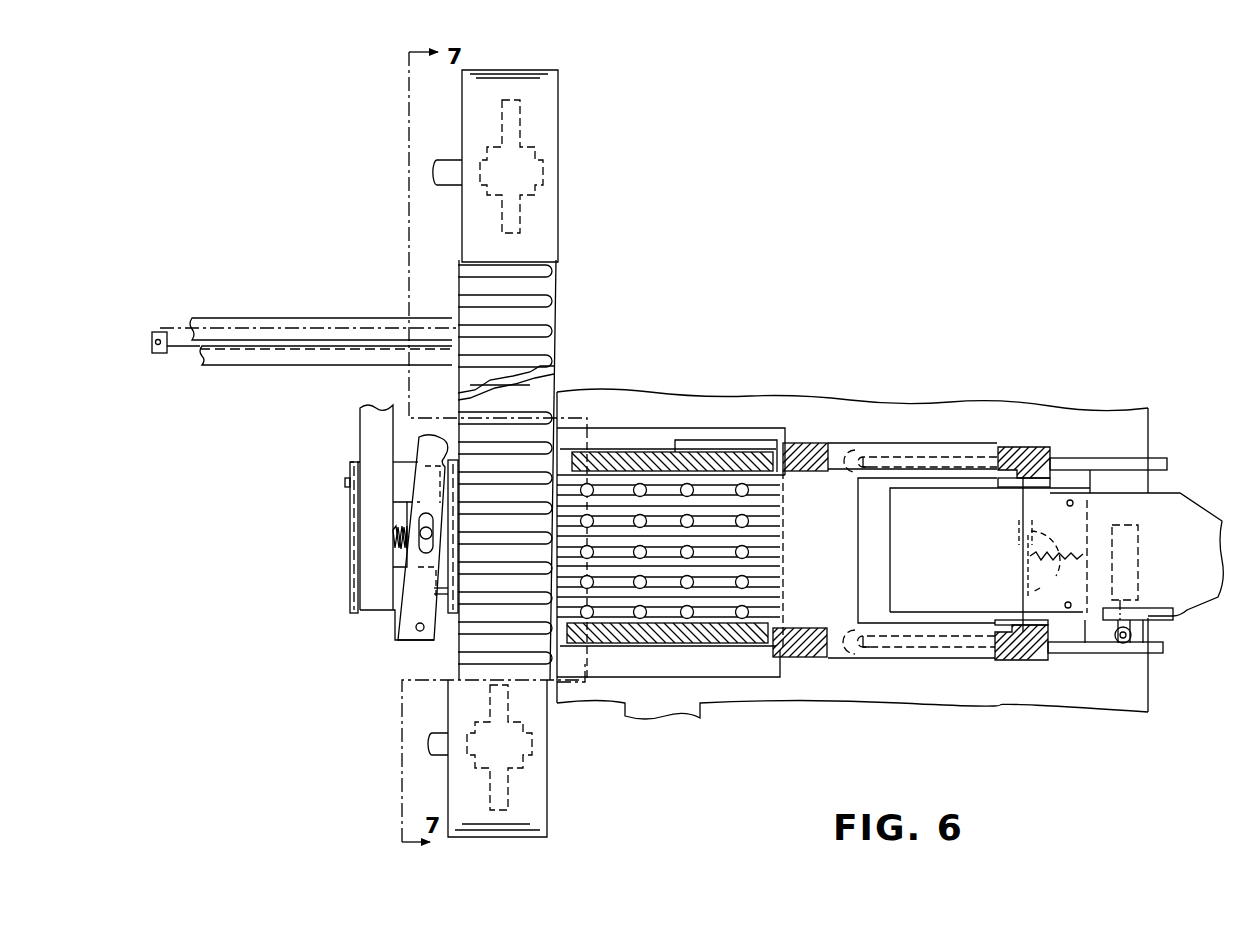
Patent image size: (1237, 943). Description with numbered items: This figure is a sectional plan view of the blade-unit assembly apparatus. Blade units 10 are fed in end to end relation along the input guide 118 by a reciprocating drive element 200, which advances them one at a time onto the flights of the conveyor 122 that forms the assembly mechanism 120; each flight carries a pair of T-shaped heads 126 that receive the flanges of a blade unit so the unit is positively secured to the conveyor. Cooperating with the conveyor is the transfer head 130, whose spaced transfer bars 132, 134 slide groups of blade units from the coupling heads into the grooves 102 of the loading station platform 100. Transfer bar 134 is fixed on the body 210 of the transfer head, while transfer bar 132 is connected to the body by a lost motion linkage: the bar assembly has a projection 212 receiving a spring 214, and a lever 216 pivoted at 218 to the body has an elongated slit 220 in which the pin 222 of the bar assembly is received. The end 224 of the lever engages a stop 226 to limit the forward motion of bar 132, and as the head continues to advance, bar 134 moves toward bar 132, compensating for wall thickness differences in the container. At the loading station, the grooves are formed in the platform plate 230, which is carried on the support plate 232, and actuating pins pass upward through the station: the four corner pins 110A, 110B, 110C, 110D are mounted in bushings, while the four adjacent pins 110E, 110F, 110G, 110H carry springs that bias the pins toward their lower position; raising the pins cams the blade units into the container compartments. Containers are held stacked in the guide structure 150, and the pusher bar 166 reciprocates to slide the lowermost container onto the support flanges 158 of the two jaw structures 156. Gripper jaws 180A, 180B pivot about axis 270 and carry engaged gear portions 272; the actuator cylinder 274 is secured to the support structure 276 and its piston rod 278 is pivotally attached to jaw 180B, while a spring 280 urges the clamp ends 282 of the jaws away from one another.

The blade unit 10 is at (360, 326).
The loading station platform 100 is at (716, 668).
The grooves 102 is at (767, 547).
The corner actuating pin 110A is at (592, 489).
The corner actuating pin 110B is at (592, 611).
The corner actuating pin 110C is at (737, 611).
The corner actuating pin 110D is at (737, 489).
The adjacent actuating pin 110E is at (592, 521).
The adjacent actuating pin 110F is at (592, 581).
The adjacent actuating pin 110G is at (737, 581).
The adjacent actuating pin 110H is at (737, 521).
The input guide 118 is at (228, 318).
The assembly mechanism 120 is at (556, 766).
The conveyor 122 is at (556, 222).
The T-shaped heads 126 is at (552, 305).
The transfer head 130 is at (342, 539).
The transfer bar 132 is at (450, 617).
The transfer bar 134 is at (355, 613).
The guide structure 150 is at (1014, 440).
The jaw structures 156 is at (645, 455).
The support flange 158 is at (603, 452).
The pusher bar 166 is at (892, 526).
The gripper jaw 180A is at (1159, 459).
The gripper jaw 180B is at (1162, 652).
The drive element 200 is at (165, 353).
The body 210 is at (418, 586).
The projection 212 is at (410, 552).
The spring 214 is at (393, 538).
The lever 216 is at (393, 582).
The pivot 218 is at (416, 631).
The elongated slit 220 is at (425, 512).
The pin 222 is at (422, 532).
The lever end 224 is at (422, 468).
The stop 226 is at (675, 444).
The platform plate 230 is at (767, 671).
The support plate 232 is at (845, 706).
The pivot axis 270 is at (1066, 503).
The gear portions 272 is at (1028, 529).
The actuator cylinder 274 is at (1140, 551).
The support structure 276 is at (1138, 618).
The piston rod 278 is at (1116, 628).
The spring 280 is at (1017, 557).
The clamp ends 282 is at (856, 453).